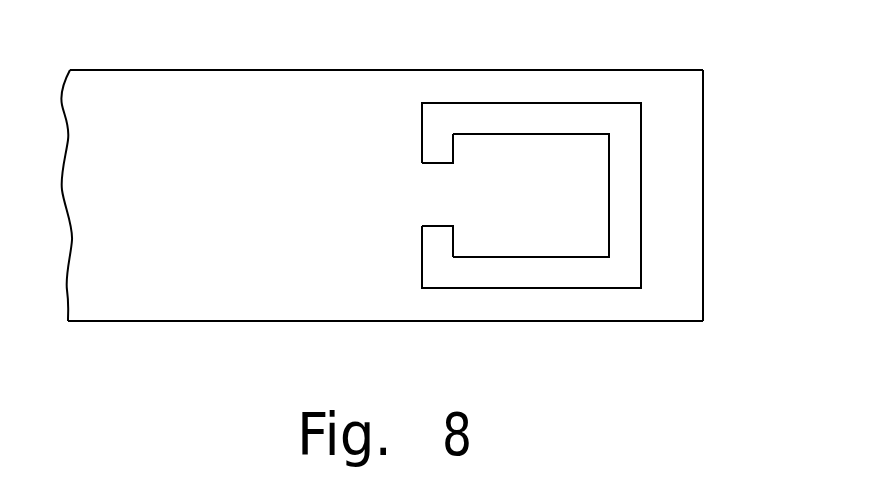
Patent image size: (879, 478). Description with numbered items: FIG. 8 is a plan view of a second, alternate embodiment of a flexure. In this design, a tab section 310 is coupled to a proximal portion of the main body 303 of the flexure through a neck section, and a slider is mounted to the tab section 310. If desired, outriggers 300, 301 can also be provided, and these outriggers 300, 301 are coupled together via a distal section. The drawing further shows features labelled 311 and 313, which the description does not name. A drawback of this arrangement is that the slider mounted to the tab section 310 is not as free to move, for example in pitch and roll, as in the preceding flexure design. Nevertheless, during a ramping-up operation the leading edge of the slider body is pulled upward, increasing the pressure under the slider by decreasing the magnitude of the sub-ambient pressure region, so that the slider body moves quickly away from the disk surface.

The outrigger 300 is at (459, 82).
The outrigger 301 is at (518, 304).
The main body 303 is at (125, 80).
The tab section 310 is at (544, 178).
The gap opening 311 is at (433, 194).
The substrate edge 313 is at (693, 207).